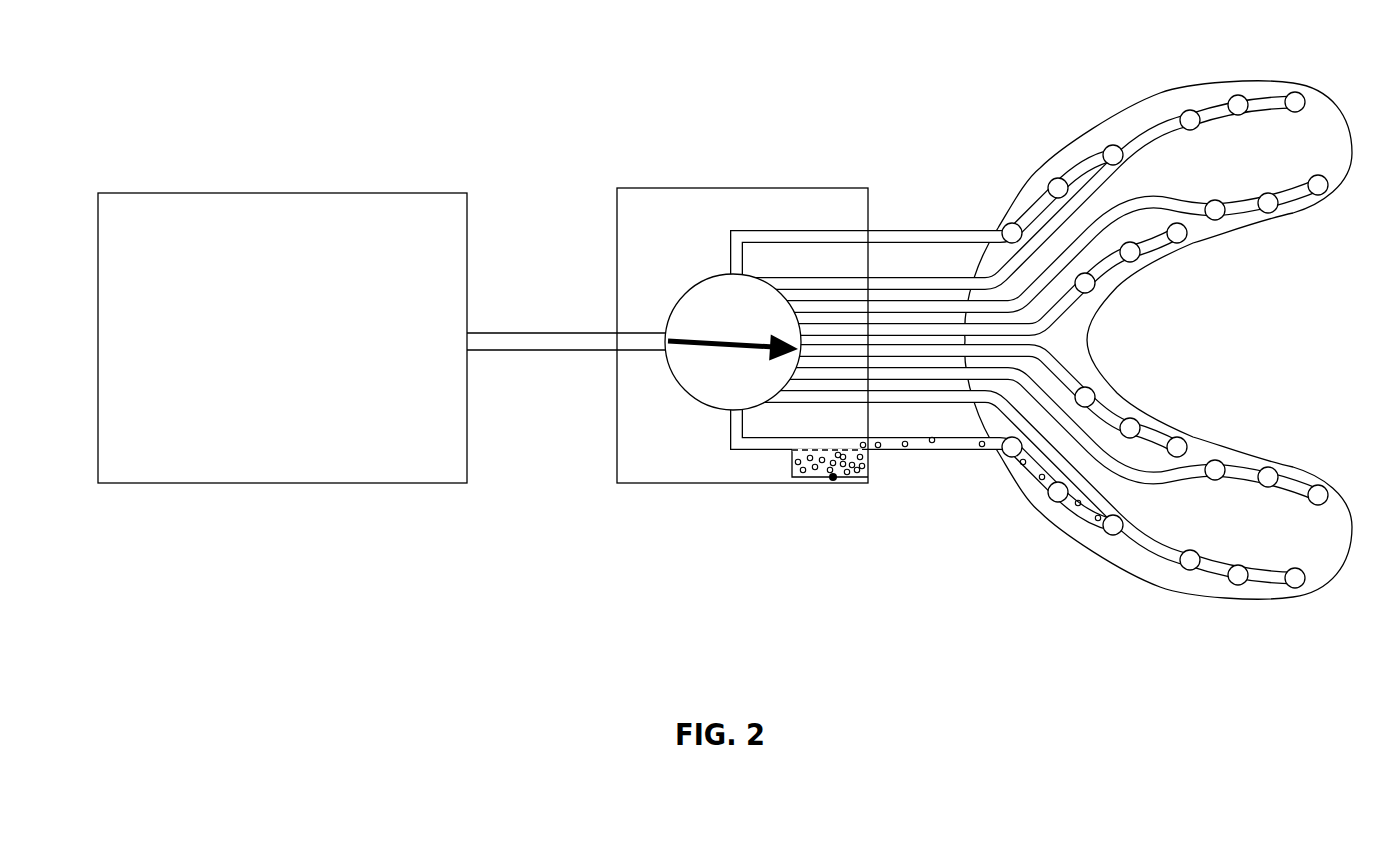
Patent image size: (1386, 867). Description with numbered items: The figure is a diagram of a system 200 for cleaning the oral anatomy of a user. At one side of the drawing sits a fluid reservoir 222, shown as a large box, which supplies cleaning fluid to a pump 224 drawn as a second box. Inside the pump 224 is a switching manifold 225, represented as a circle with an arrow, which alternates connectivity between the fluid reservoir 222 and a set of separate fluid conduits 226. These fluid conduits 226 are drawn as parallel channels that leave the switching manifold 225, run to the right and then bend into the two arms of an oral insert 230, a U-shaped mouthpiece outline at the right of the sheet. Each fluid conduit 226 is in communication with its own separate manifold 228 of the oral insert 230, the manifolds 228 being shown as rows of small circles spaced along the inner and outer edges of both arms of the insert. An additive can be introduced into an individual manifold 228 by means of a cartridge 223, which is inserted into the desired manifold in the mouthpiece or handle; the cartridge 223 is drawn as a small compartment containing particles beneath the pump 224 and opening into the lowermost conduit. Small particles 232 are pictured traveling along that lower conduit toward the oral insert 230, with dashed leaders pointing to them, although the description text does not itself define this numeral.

The system 200 is at (717, 327).
The fluid reservoir 222 is at (364, 150).
The cartridge 223 is at (835, 486).
The pump 224 is at (775, 158).
The switching manifold 225 is at (715, 381).
The fluid conduits 226 is at (902, 231).
The manifolds 228 is at (1262, 105).
The oral insert 230 is at (1220, 617).
The particles 232 is at (1052, 590).